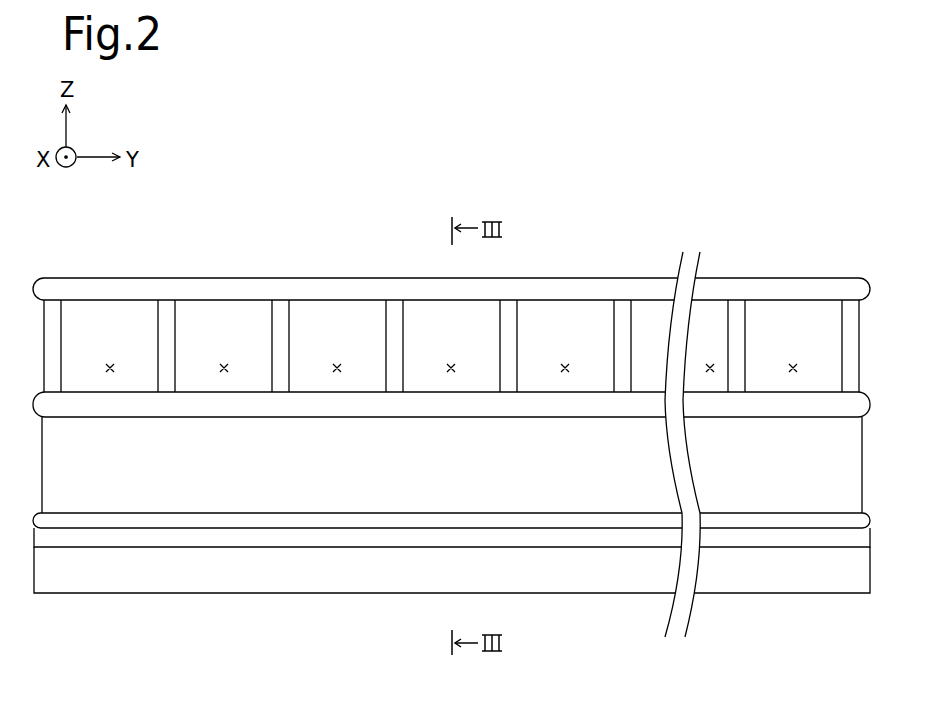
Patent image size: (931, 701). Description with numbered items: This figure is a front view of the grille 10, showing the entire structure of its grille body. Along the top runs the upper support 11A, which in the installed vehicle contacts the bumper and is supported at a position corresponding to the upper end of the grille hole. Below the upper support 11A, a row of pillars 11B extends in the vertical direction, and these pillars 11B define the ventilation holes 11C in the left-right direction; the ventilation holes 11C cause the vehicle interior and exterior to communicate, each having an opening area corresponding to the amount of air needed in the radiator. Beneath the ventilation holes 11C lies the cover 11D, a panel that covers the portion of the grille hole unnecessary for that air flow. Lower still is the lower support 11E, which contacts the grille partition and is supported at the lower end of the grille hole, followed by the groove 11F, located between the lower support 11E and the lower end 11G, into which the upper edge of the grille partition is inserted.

The grille 10 is at (793, 193).
The upper support 11A is at (108, 292).
The pillars 11B is at (53, 325).
The ventilation holes 11C is at (793, 440).
The cover 11D is at (175, 483).
The lower support 11E is at (253, 520).
The groove 11F is at (312, 540).
The lower end 11G is at (375, 575).